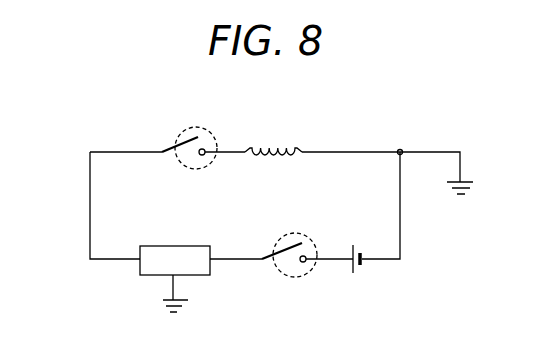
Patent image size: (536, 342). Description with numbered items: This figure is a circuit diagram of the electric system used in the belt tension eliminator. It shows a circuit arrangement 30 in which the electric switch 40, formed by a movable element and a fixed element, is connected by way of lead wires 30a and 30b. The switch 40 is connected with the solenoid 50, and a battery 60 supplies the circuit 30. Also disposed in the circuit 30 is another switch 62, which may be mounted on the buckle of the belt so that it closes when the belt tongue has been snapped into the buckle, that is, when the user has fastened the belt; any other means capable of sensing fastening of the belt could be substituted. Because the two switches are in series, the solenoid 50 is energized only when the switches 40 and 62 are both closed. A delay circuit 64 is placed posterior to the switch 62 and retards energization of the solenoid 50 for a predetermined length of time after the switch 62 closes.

The circuit arrangement 30 is at (90, 199).
The lead wire 30a is at (148, 151).
The lead wire 30b is at (228, 150).
The electric switch 40 is at (190, 127).
The solenoid 50 is at (279, 148).
The battery 60 is at (355, 274).
The switch 62 is at (298, 277).
The delay circuit 64 is at (157, 268).